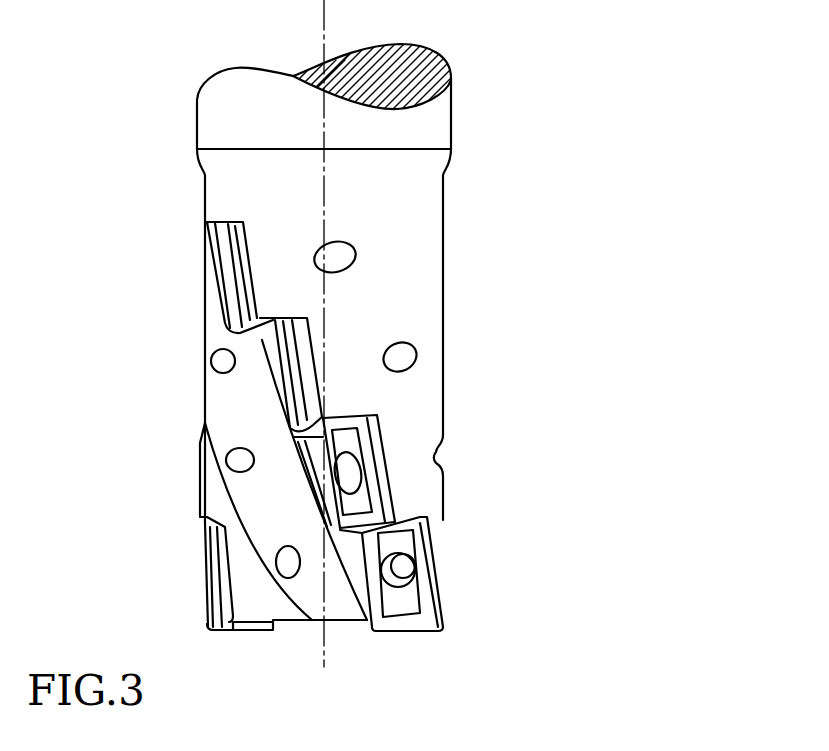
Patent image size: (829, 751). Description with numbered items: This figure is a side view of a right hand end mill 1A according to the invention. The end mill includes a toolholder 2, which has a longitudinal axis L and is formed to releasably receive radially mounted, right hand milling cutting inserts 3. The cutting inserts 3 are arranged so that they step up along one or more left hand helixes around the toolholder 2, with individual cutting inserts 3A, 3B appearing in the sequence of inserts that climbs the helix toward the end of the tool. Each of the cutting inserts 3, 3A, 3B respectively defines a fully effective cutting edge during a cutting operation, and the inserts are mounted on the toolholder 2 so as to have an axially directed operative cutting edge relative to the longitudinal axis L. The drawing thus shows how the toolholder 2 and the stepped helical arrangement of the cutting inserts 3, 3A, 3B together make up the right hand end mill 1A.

The right hand end mill 1A is at (570, 230).
The toolholder 2 is at (230, 187).
The cutting inserts 3 is at (227, 270).
The cutting insert 3A is at (367, 445).
The cutting insert 3B is at (413, 547).
The longitudinal axis L is at (326, 28).